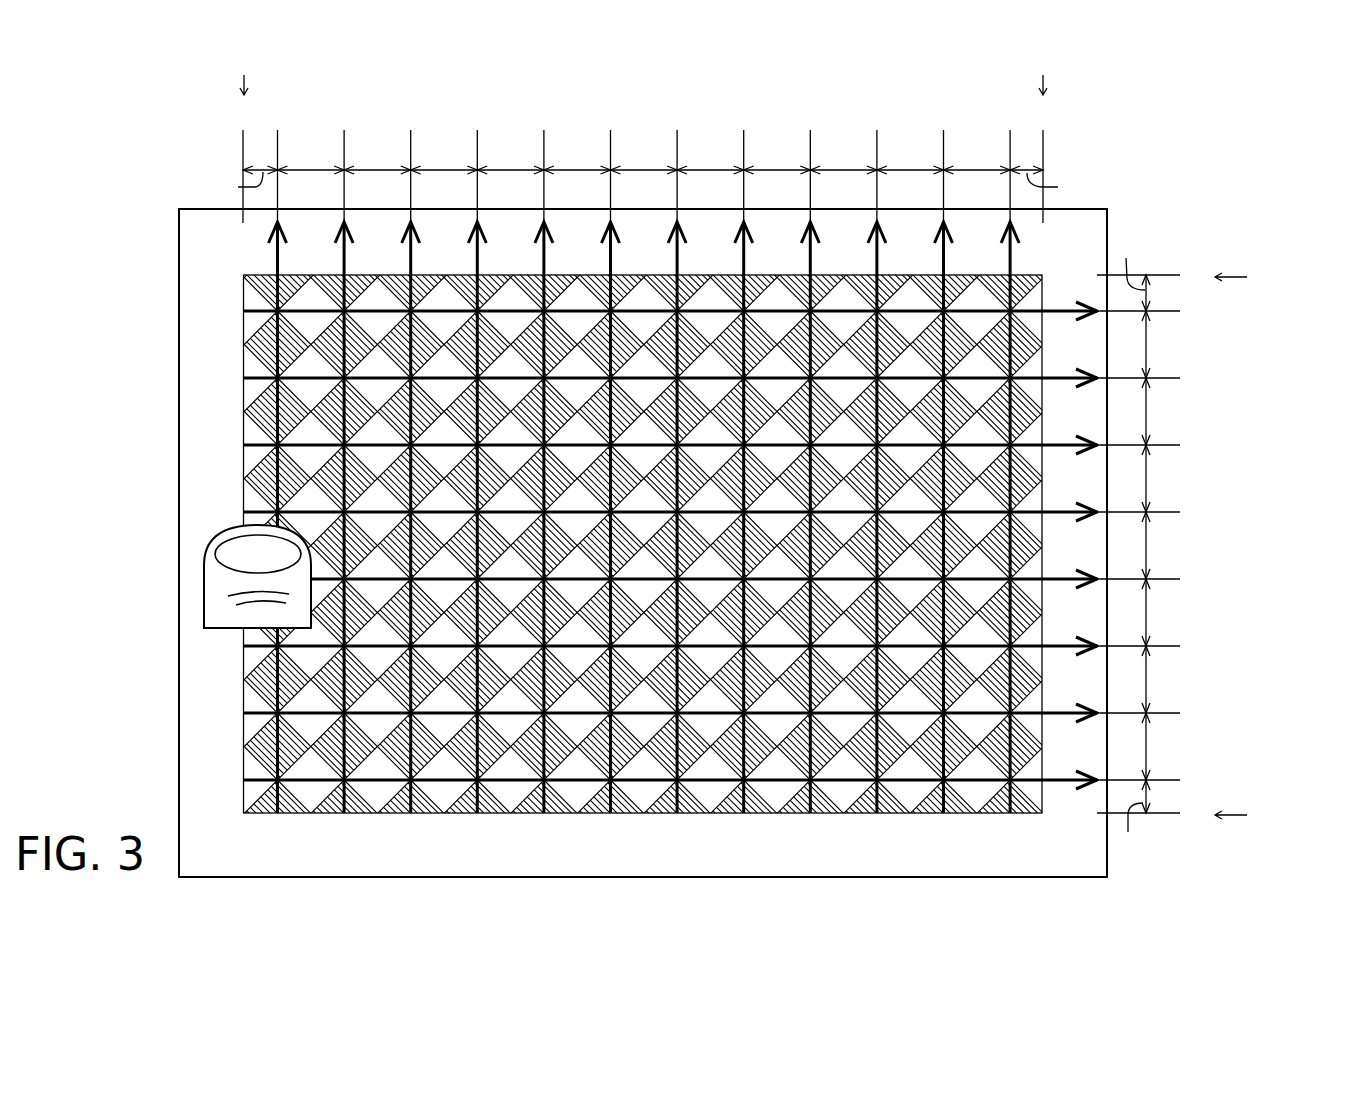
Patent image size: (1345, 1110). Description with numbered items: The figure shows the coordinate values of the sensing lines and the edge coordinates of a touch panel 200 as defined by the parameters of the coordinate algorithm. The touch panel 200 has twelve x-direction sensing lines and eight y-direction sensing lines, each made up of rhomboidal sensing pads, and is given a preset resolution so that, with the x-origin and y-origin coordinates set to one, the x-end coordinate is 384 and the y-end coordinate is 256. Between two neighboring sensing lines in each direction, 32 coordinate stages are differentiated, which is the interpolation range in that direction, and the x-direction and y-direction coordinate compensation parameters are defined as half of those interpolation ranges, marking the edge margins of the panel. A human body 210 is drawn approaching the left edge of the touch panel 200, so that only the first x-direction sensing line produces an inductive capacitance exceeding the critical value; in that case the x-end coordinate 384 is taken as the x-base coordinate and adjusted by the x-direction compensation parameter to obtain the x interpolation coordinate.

The touch panel 200 is at (1318, 907).
The human body 210 is at (204, 595).
The interpolation range 32 is at (311, 155).
The x-end coordinate 384 is at (243, 161).
The y-end coordinate 256 is at (1151, 812).